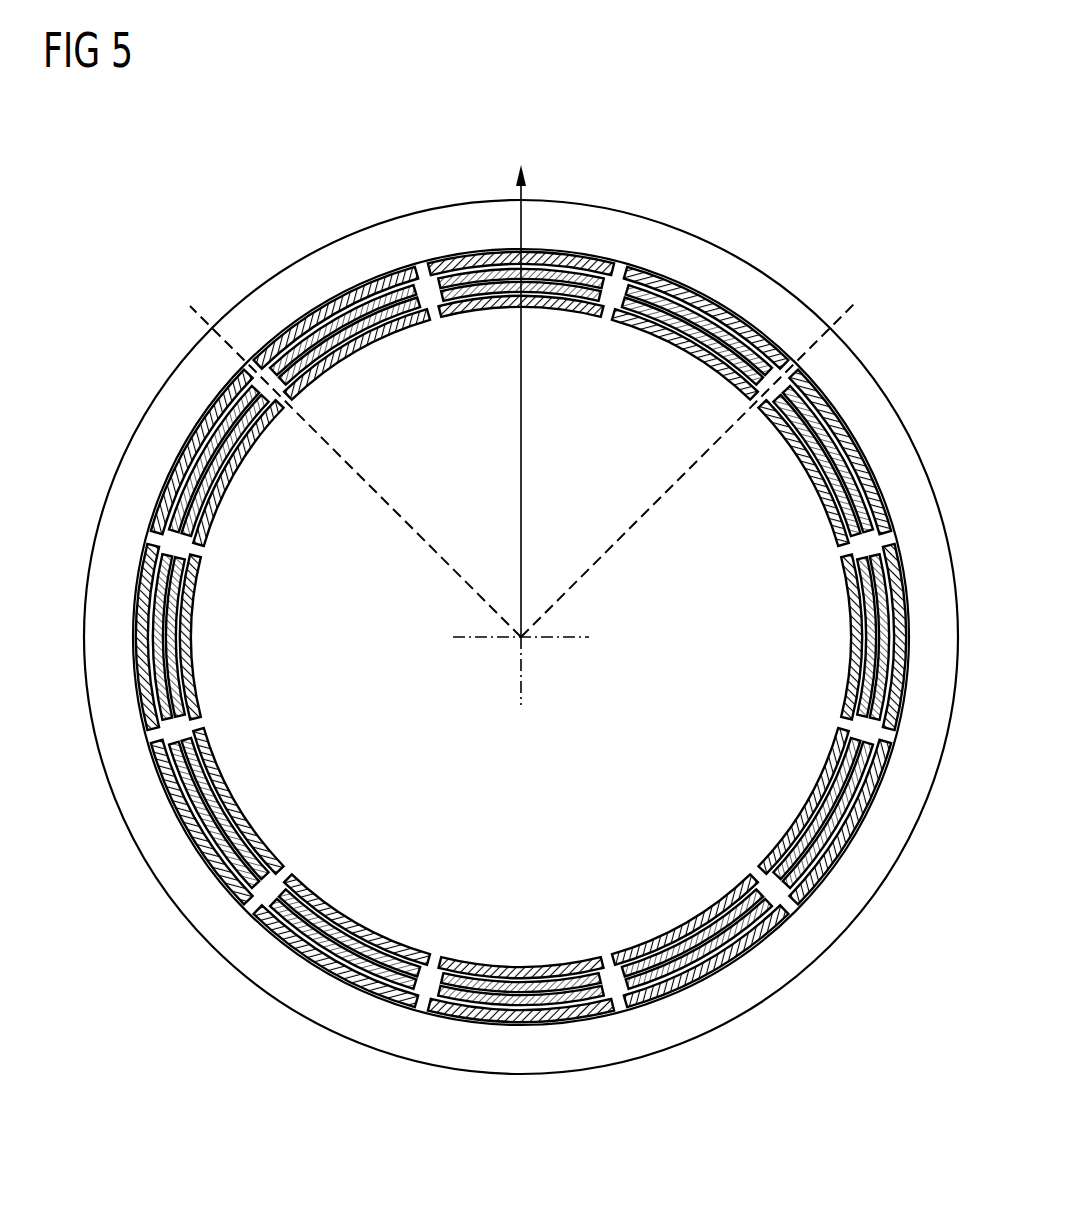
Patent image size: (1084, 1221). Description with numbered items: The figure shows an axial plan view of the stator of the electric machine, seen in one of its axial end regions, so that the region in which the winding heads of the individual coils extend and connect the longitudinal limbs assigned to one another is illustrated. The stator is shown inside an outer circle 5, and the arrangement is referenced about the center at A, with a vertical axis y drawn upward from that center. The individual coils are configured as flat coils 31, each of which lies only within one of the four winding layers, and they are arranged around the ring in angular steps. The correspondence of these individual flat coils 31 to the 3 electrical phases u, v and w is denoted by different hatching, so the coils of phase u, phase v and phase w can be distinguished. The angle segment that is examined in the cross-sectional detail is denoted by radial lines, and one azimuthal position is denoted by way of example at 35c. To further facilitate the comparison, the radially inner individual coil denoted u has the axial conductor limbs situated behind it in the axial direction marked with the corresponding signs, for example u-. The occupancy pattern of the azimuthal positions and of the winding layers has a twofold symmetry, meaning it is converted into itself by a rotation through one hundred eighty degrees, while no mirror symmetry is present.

The electrical phases 3 is at (193, 170).
The housing 5 is at (858, 380).
The flat coil 31 is at (283, 878).
The coil section 35c is at (355, 433).
The radially inner individual coil u is at (423, 318).
The axial conductor limb u- is at (565, 339).
The electrical phase v is at (722, 372).
The electrical phase w is at (850, 728).
The axis of rotation A is at (521, 637).
The y axis y is at (515, 392).